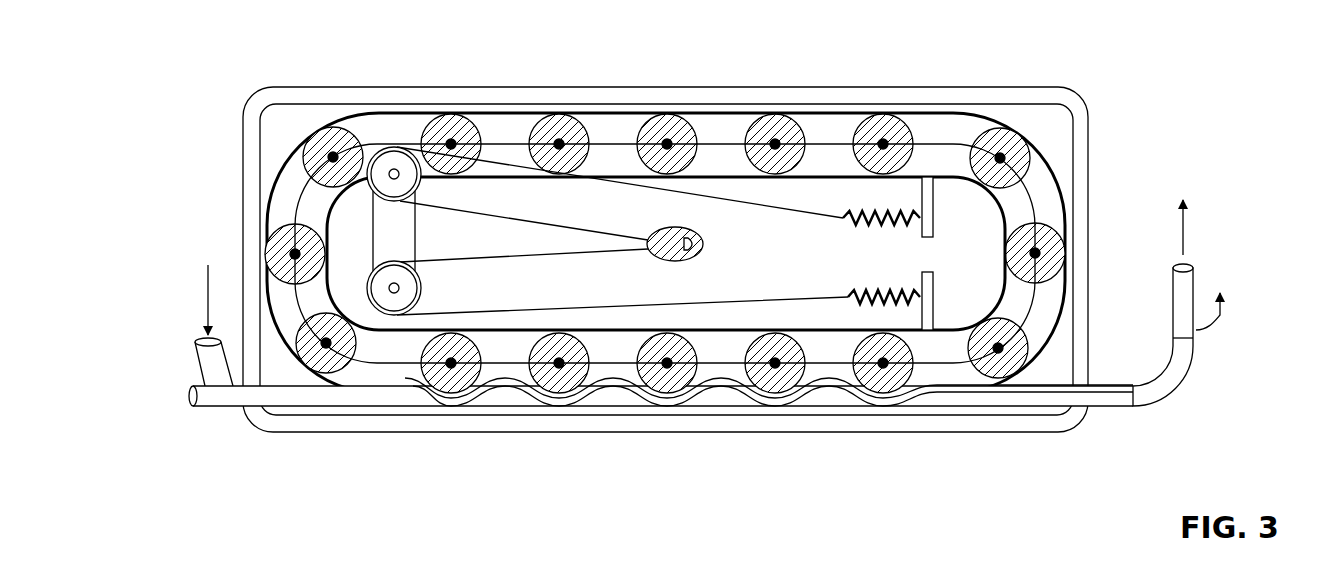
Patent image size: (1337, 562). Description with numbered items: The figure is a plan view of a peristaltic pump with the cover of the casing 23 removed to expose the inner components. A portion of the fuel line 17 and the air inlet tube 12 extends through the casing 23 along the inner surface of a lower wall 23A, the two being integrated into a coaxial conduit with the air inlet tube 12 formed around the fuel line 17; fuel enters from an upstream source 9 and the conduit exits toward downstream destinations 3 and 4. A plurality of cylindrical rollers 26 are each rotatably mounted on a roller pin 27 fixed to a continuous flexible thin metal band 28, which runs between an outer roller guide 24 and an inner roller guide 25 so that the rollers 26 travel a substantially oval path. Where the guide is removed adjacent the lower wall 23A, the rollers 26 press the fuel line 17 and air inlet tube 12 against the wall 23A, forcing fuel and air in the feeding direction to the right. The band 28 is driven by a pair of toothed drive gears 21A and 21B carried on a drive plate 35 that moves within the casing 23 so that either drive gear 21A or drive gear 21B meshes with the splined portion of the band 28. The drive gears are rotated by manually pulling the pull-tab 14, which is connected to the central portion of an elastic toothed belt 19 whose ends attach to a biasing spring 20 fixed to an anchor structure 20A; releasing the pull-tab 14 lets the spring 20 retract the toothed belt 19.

The downstream unit (to 3) 3 is at (1229, 292).
The downstream unit (to 4) 4 is at (1182, 211).
The upstream source (from 9) 9 is at (180, 398).
The air inlet tube 12 is at (195, 340).
The pull-tab 14 is at (705, 244).
The fuel line 17 is at (190, 405).
The toothed belt 19 is at (547, 224).
The biasing spring 20 is at (866, 285).
The anchor structure 20A is at (935, 305).
The drive gear 21A is at (422, 181).
The drive gear 21B is at (422, 288).
The casing 23 is at (395, 455).
The lower wall 23A is at (958, 436).
The outer roller guide 24 is at (1040, 137).
The inner roller guide 25 is at (682, 327).
The cylindrical rollers 26 is at (533, 343).
The roller pin 27 is at (560, 366).
The metal band 28 is at (720, 366).
The drive plate 35 is at (372, 208).